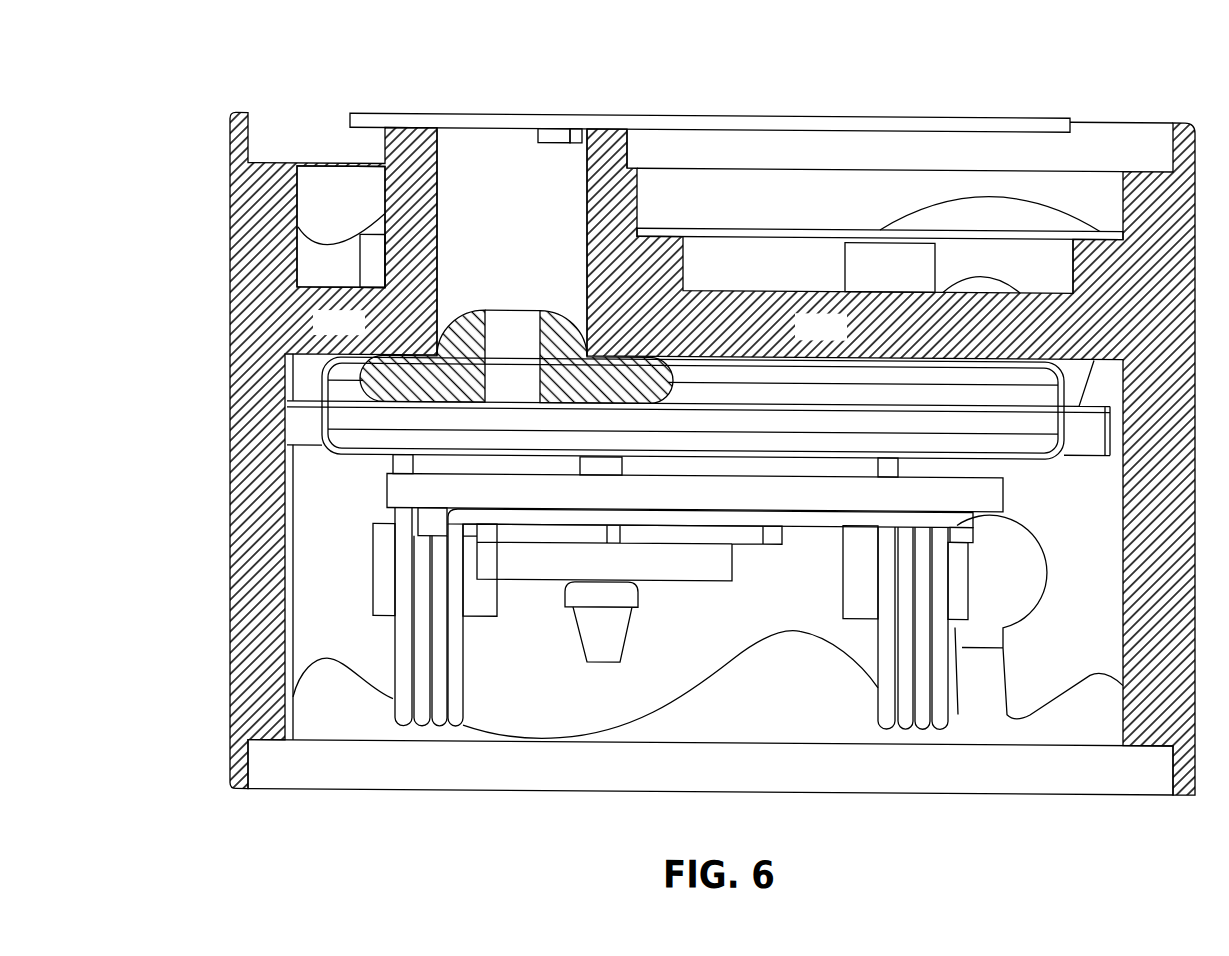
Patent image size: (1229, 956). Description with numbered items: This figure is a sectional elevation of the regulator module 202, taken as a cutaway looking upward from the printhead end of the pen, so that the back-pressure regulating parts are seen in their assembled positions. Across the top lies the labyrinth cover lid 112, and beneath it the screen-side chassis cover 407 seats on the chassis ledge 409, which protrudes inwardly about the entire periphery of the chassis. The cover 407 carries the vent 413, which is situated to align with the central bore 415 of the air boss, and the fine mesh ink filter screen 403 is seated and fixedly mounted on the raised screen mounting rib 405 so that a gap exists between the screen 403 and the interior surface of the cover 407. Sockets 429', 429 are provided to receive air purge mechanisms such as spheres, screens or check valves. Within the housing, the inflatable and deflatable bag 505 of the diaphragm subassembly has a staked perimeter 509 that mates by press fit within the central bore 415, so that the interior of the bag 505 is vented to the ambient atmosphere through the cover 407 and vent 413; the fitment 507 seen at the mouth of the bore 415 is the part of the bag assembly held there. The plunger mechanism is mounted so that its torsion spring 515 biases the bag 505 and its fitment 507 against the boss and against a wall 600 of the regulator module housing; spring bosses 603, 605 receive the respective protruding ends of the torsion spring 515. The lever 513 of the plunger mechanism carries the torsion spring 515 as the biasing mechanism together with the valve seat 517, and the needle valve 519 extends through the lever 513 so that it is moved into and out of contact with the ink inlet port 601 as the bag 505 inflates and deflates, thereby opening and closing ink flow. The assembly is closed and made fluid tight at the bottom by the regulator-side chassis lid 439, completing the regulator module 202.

The regulator module 202 is at (236, 89).
The labyrinth cover lid 112 is at (880, 114).
The screen-side chassis cover 407 is at (757, 139).
The chassis ledge 409 is at (1132, 166).
The vent 413 is at (551, 129).
The central bore 415 is at (540, 213).
The spring boss 605 is at (372, 264).
The elastomeric seal plug 507 is at (548, 325).
The ink filter screen 403 is at (785, 227).
The spring boss 603 is at (885, 263).
The socket 429' is at (1009, 269).
The screen mounting rib 405 is at (1092, 239).
The wall 600 is at (360, 334).
The staked perimeter 509 is at (288, 428).
The inflatable and deflatable bag 505 is at (1000, 424).
The ink inlet port 601 is at (623, 461).
The lever 513 is at (858, 496).
The valve seat 517 is at (682, 558).
The needle valve 519 is at (588, 627).
The torsion spring 515 is at (420, 728).
The socket 429 is at (1039, 617).
The regulator-side chassis lid 439 is at (320, 765).